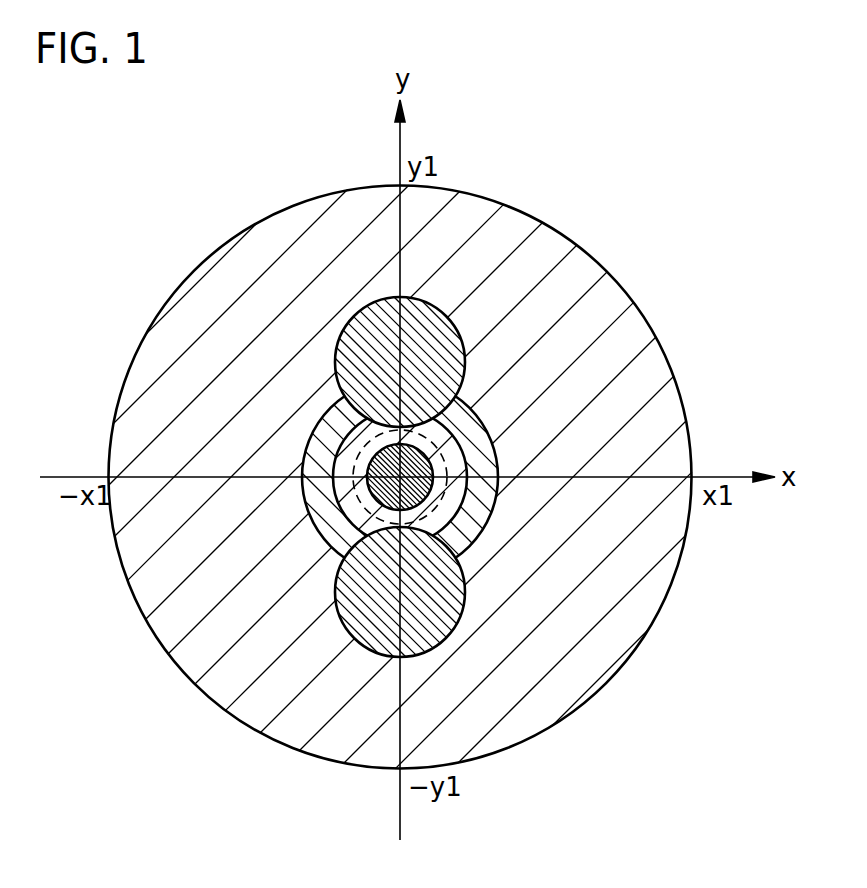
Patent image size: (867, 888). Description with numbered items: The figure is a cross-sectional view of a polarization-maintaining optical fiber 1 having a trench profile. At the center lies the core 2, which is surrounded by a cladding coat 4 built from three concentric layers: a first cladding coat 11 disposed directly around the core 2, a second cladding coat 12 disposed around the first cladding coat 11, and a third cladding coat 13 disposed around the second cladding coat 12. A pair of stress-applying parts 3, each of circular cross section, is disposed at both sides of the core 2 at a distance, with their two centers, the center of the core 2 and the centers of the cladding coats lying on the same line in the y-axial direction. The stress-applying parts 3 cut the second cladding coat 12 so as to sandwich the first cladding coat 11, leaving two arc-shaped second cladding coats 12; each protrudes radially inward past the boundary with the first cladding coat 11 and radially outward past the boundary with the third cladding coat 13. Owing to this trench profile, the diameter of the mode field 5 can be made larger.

The polarization-maintaining optical fiber 1 is at (379, 409).
The core 2 is at (430, 455).
The stress-applying part 3 is at (465, 338).
The cladding coat 4 is at (357, 477).
The mode field 5 is at (447, 478).
The first cladding coat 11 is at (350, 438).
The second cladding coat 12 is at (318, 453).
The third cladding coat 13 is at (153, 407).